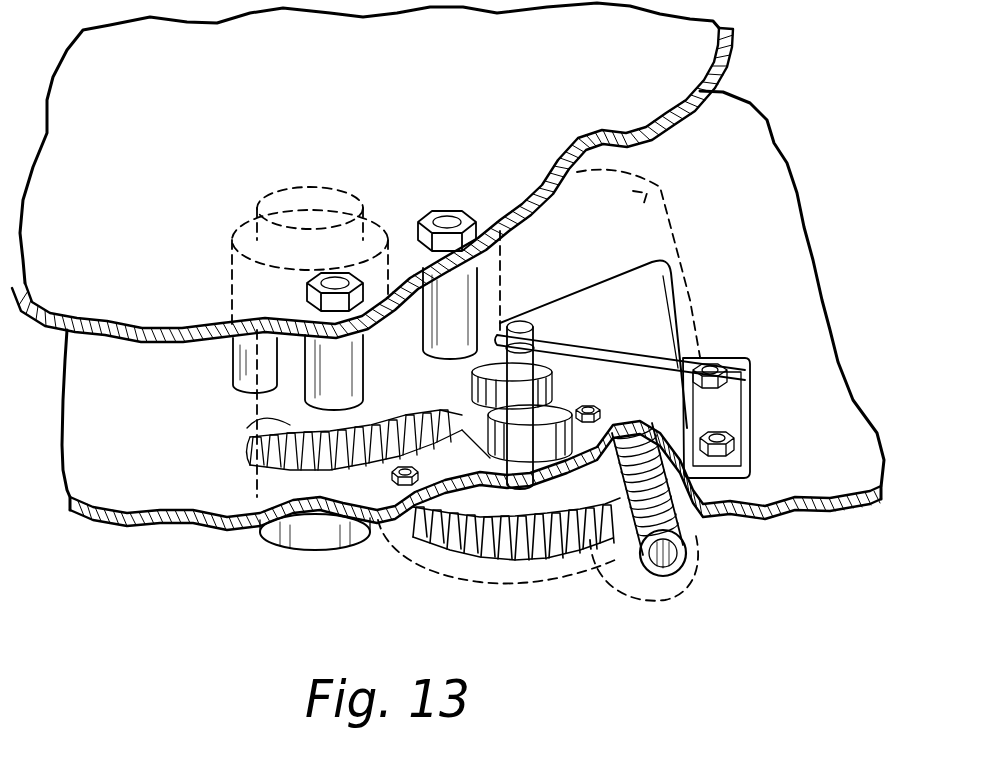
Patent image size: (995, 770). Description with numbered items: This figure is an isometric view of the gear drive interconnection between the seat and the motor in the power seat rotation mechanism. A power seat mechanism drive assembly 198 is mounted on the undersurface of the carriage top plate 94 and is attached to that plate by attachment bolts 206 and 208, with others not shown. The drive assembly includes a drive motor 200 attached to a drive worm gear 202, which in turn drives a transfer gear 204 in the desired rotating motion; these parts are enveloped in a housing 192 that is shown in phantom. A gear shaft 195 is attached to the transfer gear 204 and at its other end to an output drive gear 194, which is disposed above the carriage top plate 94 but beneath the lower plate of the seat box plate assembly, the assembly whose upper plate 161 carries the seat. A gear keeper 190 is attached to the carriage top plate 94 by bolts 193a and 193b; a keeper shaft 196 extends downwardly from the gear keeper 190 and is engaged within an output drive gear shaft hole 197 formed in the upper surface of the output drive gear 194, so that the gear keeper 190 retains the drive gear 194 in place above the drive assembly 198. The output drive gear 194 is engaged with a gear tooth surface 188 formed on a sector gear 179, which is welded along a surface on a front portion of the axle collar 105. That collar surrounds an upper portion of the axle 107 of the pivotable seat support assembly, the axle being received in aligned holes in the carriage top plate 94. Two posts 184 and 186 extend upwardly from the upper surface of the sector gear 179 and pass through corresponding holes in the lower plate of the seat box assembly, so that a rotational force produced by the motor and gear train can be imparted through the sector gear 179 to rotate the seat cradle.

The upper plate 161 is at (489, 101).
The carriage top plate 94 is at (766, 273).
The axle collar 105 is at (218, 283).
The axle 107 is at (290, 188).
The post 184 is at (480, 270).
The post 186 is at (305, 358).
The sector gear 179 is at (274, 407).
The gear tooth surface 188 is at (263, 470).
The output drive gear shaft hole 197 is at (368, 395).
The gear shaft 195 is at (524, 474).
The keeper shaft 196 is at (537, 328).
The output drive gear 194 is at (543, 348).
The attachment bolt 206 is at (597, 405).
The gear keeper 190 is at (627, 286).
The bolt 193a is at (740, 458).
The bolt 193b is at (733, 373).
The power seat mechanism drive assembly 198 is at (690, 166).
The drive motor 200 is at (670, 184).
The drive worm gear 202 is at (688, 563).
The transfer gear 204 is at (629, 578).
The housing 192 is at (484, 592).
The attachment bolt 208 is at (382, 505).